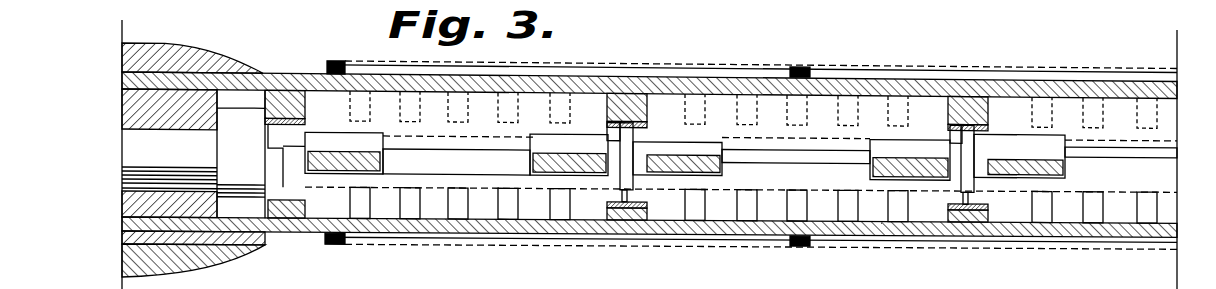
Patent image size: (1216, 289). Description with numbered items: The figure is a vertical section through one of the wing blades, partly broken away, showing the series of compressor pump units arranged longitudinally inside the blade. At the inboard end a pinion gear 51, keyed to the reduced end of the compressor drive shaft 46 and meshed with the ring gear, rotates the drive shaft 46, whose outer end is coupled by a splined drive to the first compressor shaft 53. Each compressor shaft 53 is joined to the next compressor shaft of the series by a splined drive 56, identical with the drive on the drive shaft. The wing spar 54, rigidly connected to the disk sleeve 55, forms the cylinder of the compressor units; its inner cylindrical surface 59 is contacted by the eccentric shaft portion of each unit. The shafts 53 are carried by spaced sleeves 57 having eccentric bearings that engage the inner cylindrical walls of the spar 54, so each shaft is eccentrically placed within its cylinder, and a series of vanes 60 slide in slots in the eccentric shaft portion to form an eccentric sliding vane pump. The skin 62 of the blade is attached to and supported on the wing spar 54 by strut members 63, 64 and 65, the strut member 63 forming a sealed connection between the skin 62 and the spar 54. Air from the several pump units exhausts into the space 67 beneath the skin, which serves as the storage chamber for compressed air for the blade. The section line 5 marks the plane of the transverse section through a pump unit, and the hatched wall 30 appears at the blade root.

The section line 5- 5 is at (764, 41).
The housing end wall 30 is at (193, 55).
The compressor drive shaft 46 is at (193, 172).
The pinion gear 51 is at (278, 103).
The compressor shaft 53 is at (700, 145).
The wing spar 54 is at (290, 71).
The disk sleeve 55 is at (1050, 150).
The splined drive 56 is at (637, 197).
The sleeve 57 is at (283, 231).
The inner cylindrical surface 59 is at (265, 246).
The vane 60 is at (565, 212).
The skin 62 is at (578, 59).
The strut member 63 is at (340, 62).
The strut member 64 is at (803, 60).
The strut member 65 is at (1172, 72).
The space 67 is at (880, 66).